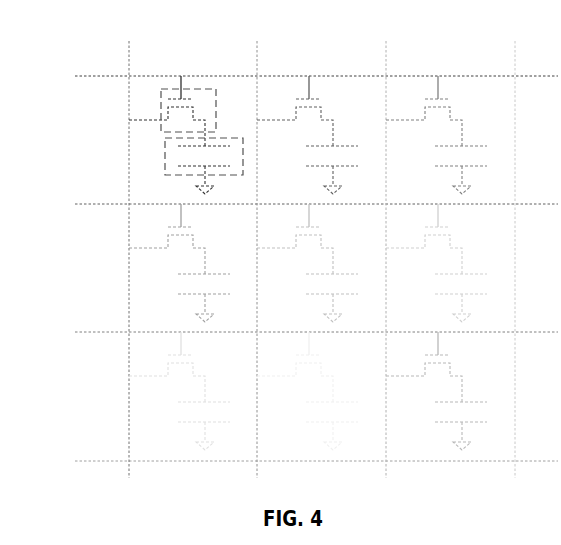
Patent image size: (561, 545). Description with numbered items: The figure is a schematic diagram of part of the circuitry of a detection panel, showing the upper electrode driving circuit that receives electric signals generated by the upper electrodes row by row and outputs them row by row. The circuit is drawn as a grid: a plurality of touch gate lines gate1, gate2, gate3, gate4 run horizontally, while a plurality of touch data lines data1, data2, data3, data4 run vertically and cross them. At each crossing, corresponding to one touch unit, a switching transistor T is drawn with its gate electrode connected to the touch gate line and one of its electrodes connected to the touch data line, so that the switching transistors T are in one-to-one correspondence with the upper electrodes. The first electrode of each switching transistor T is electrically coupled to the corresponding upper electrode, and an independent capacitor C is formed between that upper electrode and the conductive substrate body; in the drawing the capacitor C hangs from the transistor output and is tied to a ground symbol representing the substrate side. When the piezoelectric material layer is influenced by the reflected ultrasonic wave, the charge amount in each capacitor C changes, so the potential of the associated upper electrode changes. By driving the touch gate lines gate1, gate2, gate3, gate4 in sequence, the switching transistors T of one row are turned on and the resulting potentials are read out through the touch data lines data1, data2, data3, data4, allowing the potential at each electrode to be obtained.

The switching transistor T is at (216, 110).
The capacitor C is at (165, 145).
The touch gate line gate1 is at (292, 78).
The touch gate line gate2 is at (292, 206).
The touch gate line gate3 is at (292, 334).
The touch gate line gate4 is at (292, 463).
The touch data line data1 is at (130, 249).
The touch data line data2 is at (258, 249).
The touch data line data3 is at (387, 249).
The touch data line data4 is at (518, 249).